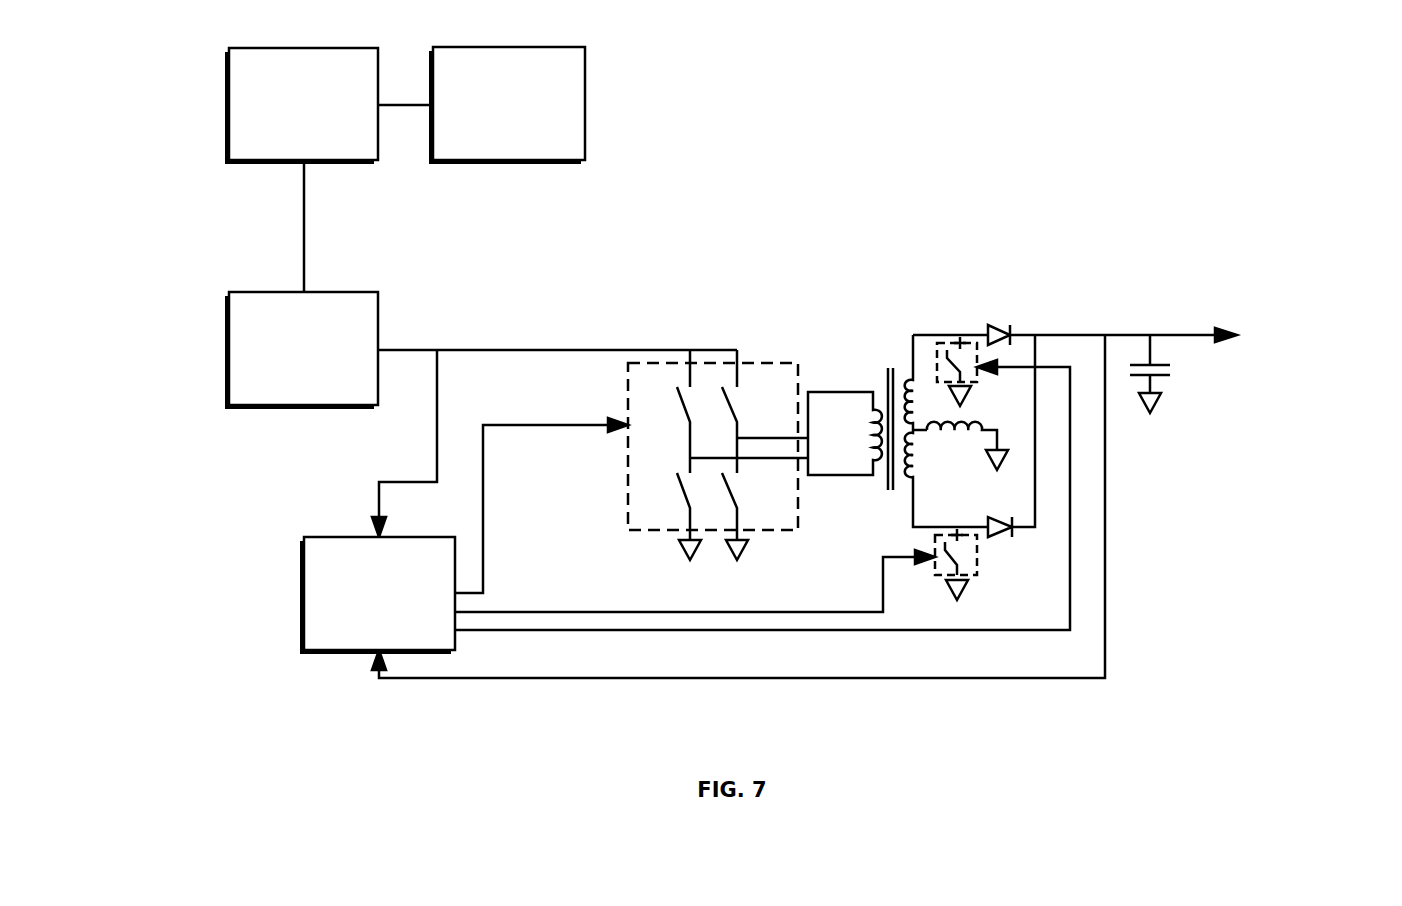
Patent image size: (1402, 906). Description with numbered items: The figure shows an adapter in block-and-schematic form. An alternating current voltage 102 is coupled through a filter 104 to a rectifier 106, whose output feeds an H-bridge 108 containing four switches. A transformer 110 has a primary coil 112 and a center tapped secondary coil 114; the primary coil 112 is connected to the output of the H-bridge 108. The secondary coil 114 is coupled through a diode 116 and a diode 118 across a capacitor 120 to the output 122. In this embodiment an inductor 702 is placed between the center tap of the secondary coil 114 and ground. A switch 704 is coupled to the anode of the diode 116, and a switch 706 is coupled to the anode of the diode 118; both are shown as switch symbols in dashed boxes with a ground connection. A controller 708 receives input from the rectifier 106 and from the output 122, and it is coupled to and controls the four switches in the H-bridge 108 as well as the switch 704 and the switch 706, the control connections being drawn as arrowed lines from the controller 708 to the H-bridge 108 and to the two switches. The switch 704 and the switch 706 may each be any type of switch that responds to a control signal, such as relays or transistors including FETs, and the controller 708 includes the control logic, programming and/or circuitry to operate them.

The alternating current (AC) voltage 102 is at (507, 105).
The filter 104 is at (301, 106).
The rectifier 106 is at (301, 350).
The H-bridge 108 is at (628, 385).
The transformer 110 is at (883, 350).
The primary coil 112 is at (863, 410).
The secondary coil 114 is at (920, 365).
The diode 116 is at (993, 538).
The diode 118 is at (998, 318).
The capacitor 120 is at (1177, 350).
The output 122 is at (1238, 345).
The inductor 702 is at (952, 438).
The switch 704 is at (937, 583).
The switch 706 is at (975, 350).
The controller 708 is at (377, 595).